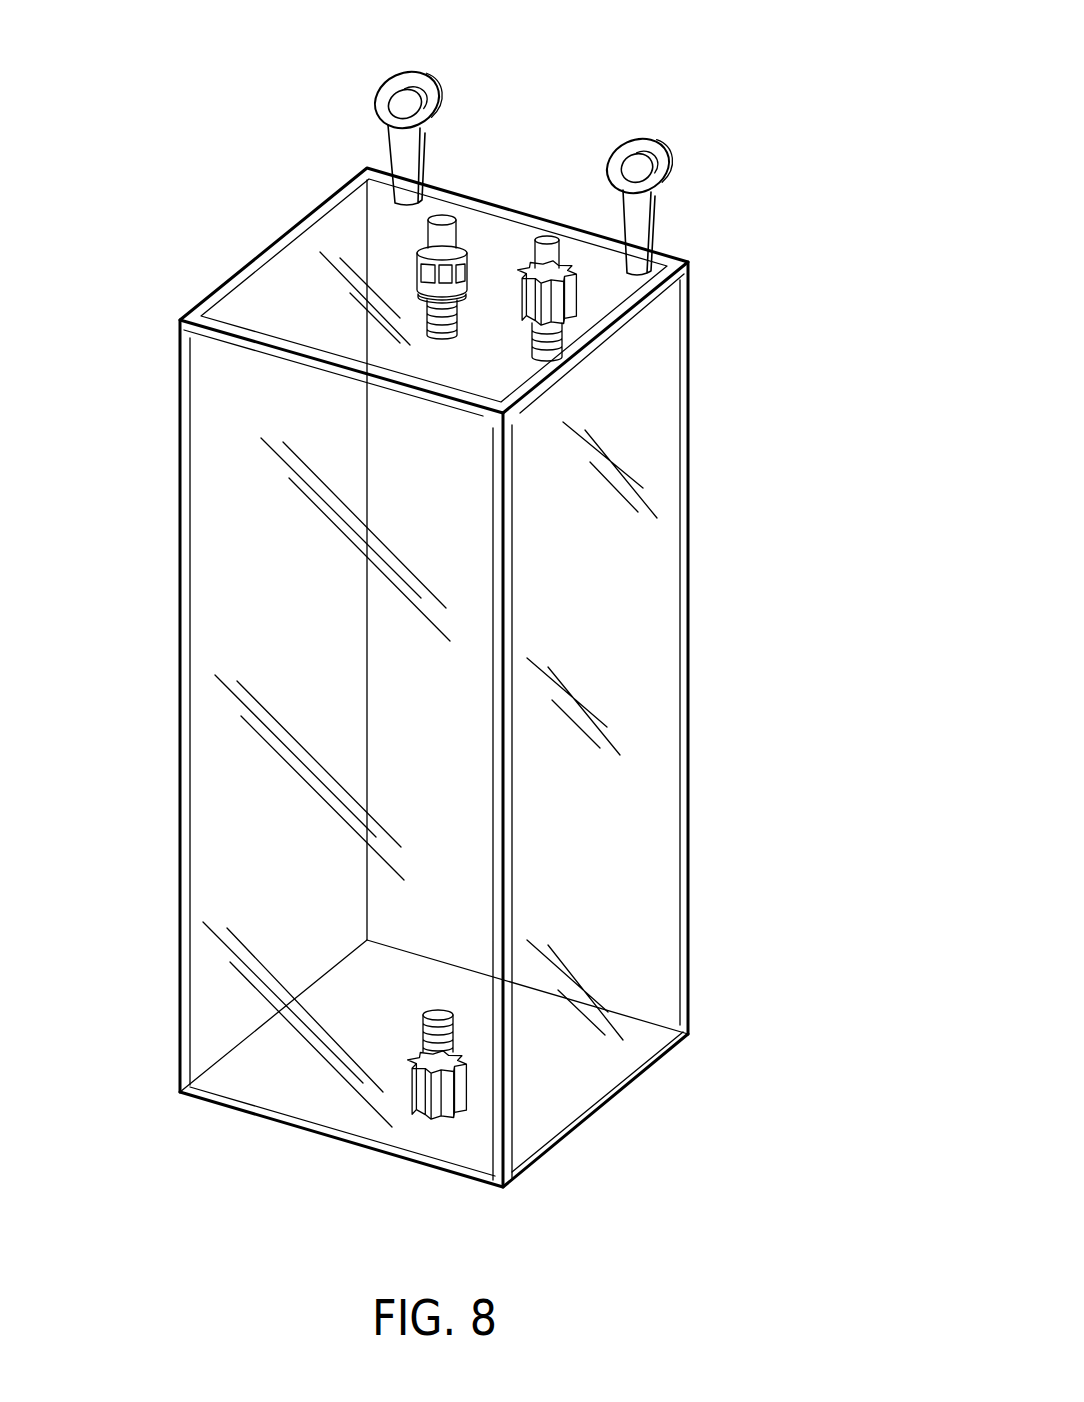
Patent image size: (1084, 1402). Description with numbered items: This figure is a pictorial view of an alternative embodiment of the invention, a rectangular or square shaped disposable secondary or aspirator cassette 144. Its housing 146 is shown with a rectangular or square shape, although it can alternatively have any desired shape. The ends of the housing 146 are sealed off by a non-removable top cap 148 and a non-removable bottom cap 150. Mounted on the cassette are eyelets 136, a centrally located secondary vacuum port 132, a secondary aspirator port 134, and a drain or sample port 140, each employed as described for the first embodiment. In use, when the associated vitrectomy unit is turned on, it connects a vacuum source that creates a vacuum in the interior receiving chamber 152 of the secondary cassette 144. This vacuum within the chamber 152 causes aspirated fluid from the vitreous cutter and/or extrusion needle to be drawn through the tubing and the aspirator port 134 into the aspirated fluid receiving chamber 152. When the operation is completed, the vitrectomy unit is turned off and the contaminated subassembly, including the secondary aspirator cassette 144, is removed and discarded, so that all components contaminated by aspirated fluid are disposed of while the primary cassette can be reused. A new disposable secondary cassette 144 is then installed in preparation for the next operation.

The secondary vacuum port 132 is at (470, 263).
The secondary aspirator port 134 is at (518, 282).
The eyelets 136 is at (427, 84).
The drain or sample port 140 is at (403, 1070).
The secondary or aspirator cassette 144 is at (702, 730).
The housing 146 is at (662, 578).
The top cap 148 is at (605, 298).
The bottom cap 150 is at (590, 1082).
The interior receiving chamber 152 is at (595, 902).